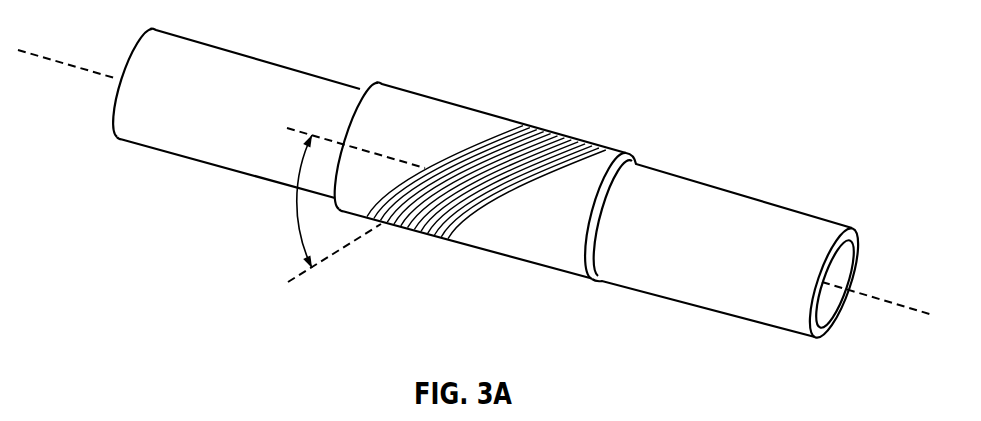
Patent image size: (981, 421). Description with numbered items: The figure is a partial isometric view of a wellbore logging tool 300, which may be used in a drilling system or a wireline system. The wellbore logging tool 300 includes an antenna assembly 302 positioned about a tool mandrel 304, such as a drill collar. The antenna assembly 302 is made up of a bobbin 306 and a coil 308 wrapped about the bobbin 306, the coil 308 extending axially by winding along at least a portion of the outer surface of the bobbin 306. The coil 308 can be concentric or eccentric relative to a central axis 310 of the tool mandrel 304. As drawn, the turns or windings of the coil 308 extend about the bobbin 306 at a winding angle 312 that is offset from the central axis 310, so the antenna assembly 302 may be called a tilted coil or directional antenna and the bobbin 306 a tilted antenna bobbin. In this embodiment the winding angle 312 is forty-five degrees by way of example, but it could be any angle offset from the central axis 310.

The wellbore logging tool 300 is at (666, 62).
The antenna assembly 302 is at (514, 96).
The tool mandrel 304 is at (740, 193).
The bobbin 306 is at (412, 88).
The coil 308 is at (565, 133).
The central axis 310 is at (875, 299).
The winding angle 312 is at (330, 208).